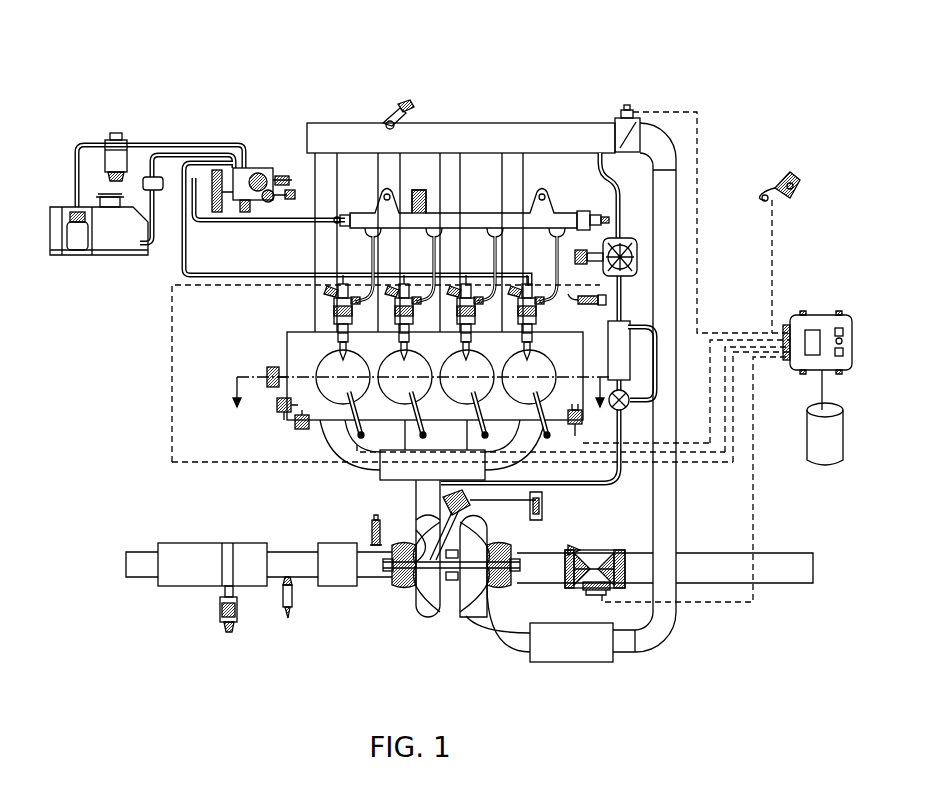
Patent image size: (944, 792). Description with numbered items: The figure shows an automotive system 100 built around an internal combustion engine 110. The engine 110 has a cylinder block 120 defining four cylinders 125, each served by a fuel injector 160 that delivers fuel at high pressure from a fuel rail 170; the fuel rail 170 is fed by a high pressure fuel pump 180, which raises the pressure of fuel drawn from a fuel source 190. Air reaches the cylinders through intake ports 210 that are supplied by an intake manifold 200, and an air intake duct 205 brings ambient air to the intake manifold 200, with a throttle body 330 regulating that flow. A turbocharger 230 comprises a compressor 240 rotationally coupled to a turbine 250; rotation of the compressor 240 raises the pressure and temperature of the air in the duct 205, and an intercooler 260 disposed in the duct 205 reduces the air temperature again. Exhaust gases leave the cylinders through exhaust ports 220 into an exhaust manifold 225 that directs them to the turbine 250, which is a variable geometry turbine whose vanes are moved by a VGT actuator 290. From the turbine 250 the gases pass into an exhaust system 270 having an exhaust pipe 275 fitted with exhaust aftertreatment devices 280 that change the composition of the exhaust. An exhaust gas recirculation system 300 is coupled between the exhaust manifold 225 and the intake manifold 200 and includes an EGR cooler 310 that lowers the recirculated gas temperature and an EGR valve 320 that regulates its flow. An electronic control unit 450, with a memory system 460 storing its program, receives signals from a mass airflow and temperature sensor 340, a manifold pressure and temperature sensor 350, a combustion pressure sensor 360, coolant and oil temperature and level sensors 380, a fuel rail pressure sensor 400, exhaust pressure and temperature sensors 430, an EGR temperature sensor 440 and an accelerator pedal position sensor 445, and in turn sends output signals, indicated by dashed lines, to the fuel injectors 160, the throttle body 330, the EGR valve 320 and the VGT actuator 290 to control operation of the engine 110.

The automotive system 100 is at (226, 107).
The internal combustion engine 110 is at (547, 105).
The cylinder block 120 is at (287, 335).
The cylinder 125 is at (547, 358).
The fuel injector 160 is at (343, 313).
The fuel rail 170 is at (340, 228).
The high pressure fuel pump 180 is at (263, 163).
The fuel source 190 is at (120, 240).
The intake manifold 200 is at (452, 140).
The air intake duct 205 is at (668, 527).
The intake port 210 is at (322, 335).
The exhaust port 220 is at (335, 427).
The exhaust manifold 225 is at (405, 470).
The turbocharger 230 is at (423, 625).
The compressor 240 is at (477, 593).
The turbine 250 is at (423, 588).
The intercooler 260 is at (592, 648).
The exhaust system 270 is at (192, 530).
The exhaust pipe 275 is at (140, 565).
The exhaust aftertreatment device 280 is at (183, 565).
The VGT actuator 290 is at (472, 508).
The exhaust gas recirculation system 300 is at (590, 556).
The EGR cooler 310 is at (618, 363).
The EGR valve 320 is at (625, 237).
The throttle body 330 is at (628, 107).
The mass airflow and temperature sensor 340 is at (585, 588).
The manifold pressure and temperature sensor 350 is at (402, 113).
The combustion pressure sensor 360 is at (353, 433).
The coolant and oil temperature and level sensors 380 is at (293, 427).
The fuel rail pressure sensor 400 is at (603, 217).
The exhaust pressure and temperature sensors 430 is at (288, 617).
The EGR temperature sensor 440 is at (606, 300).
The accelerator pedal position sensor 445 is at (778, 178).
The electronic control unit 450 is at (822, 315).
The memory system 460 is at (823, 447).